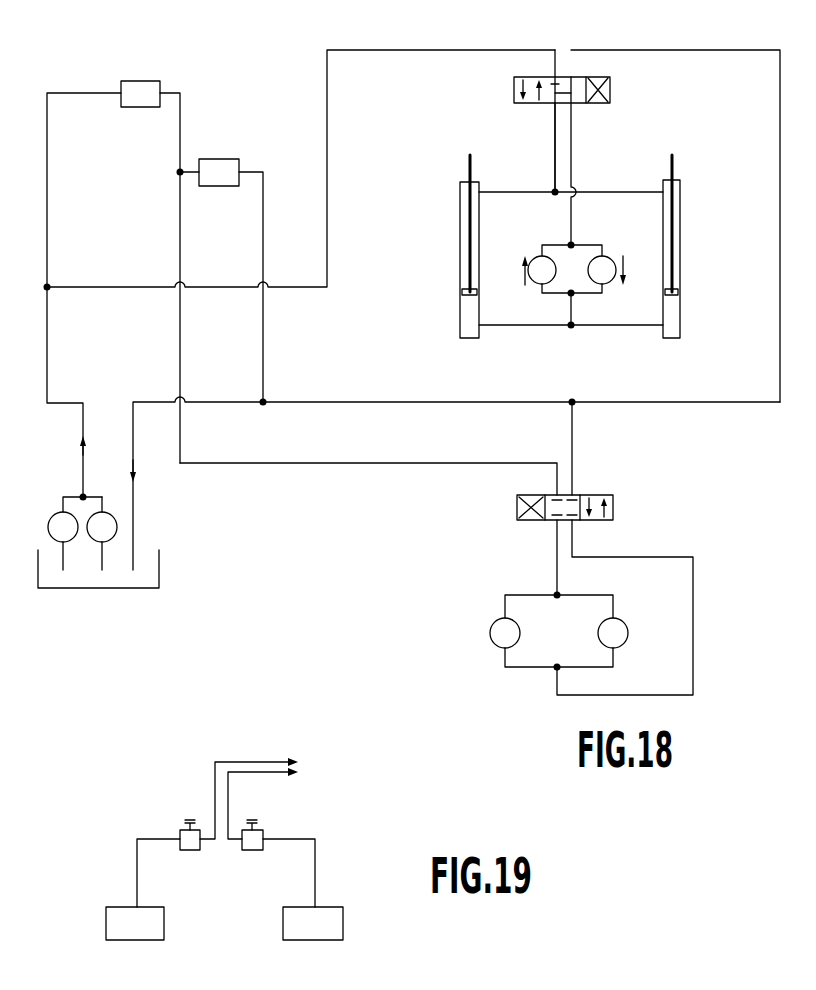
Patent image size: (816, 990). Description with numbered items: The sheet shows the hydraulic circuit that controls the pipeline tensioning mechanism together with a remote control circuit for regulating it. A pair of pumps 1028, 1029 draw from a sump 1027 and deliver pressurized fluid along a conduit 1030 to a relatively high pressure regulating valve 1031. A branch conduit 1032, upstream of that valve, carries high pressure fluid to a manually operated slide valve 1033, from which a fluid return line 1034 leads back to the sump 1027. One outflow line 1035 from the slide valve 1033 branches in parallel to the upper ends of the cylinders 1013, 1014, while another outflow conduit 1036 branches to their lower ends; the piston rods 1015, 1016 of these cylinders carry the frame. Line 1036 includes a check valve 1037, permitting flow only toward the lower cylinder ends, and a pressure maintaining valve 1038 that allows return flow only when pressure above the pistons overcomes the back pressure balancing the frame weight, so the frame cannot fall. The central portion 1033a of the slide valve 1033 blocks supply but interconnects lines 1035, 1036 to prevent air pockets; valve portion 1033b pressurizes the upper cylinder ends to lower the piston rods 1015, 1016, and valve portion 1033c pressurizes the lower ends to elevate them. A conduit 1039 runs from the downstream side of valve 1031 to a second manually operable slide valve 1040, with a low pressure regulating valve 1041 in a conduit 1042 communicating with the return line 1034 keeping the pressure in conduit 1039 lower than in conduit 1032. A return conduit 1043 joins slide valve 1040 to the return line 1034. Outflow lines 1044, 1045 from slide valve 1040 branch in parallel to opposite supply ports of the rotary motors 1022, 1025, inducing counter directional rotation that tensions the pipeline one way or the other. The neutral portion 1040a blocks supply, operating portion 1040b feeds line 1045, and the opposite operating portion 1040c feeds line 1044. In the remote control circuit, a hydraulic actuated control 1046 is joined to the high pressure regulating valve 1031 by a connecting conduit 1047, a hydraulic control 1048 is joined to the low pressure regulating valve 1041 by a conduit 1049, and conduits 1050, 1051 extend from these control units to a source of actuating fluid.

In FIG. 18, the cylinder 1013 is at (681, 263).
In FIG. 18, the cylinder 1014 is at (460, 257).
In FIG. 18, the piston rod 1015 is at (675, 162).
In FIG. 18, the piston rod 1016 is at (467, 168).
In FIG. 18, the rotary motor 1022 is at (490, 622).
In FIG. 18, the rotary motor 1025 is at (626, 640).
In FIG. 18, the sump 1027 is at (133, 522).
In FIG. 18, the pump 1028 is at (73, 540).
In FIG. 18, the pump 1029 is at (110, 540).
In FIG. 18, the conduit 1030 is at (47, 255).
In FIG. 18, the high pressure regulating valve 1031 is at (160, 86).
In FIG. 19, the high pressure regulating valve 1031 is at (164, 913).
In FIG. 18, the branch conduit 1032 is at (133, 293).
In FIG. 18, the slide valve 1033 is at (572, 105).
In FIG. 18, the central portion 1033a is at (556, 80).
In FIG. 18, the valve portion 1033b is at (514, 85).
In FIG. 18, the valve portion 1033c is at (610, 90).
In FIG. 18, the fluid return line 1034 is at (765, 50).
In FIG. 18, the outflow line 1035 is at (555, 128).
In FIG. 18, the outflow conduit 1036 is at (572, 150).
In FIG. 18, the check valve 1037 is at (612, 260).
In FIG. 18, the pressure maintaining valve 1038 is at (530, 262).
In FIG. 18, the conduit 1039 is at (325, 463).
In FIG. 18, the slide valve 1040 is at (580, 493).
In FIG. 18, the neutral portion 1040a is at (553, 522).
In FIG. 18, the operating portion 1040b is at (517, 508).
In FIG. 18, the operating portion 1040c is at (613, 510).
In FIG. 18, the low pressure regulating valve 1041 is at (240, 158).
In FIG. 19, the low pressure regulating valve 1041 is at (343, 923).
In FIG. 18, the conduit 1042 is at (263, 240).
In FIG. 18, the return conduit 1043 is at (573, 420).
In FIG. 18, the outflow line 1044 is at (557, 571).
In FIG. 18, the outflow line 1045 is at (622, 557).
In FIG. 19, the hydraulic actuated control 1046 is at (180, 830).
In FIG. 19, the connecting conduit 1047 is at (137, 892).
In FIG. 19, the hydraulic control 1048 is at (263, 835).
In FIG. 19, the conduit 1049 is at (346, 890).
In FIG. 19, the conduit 1050 is at (228, 765).
In FIG. 19, the conduit 1051 is at (244, 775).